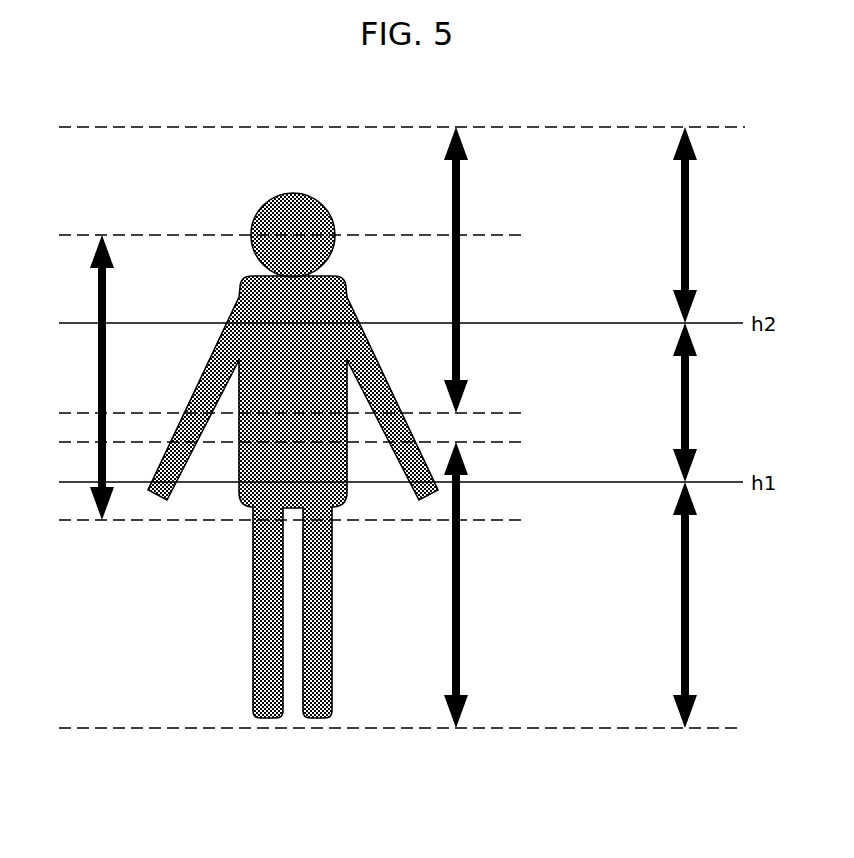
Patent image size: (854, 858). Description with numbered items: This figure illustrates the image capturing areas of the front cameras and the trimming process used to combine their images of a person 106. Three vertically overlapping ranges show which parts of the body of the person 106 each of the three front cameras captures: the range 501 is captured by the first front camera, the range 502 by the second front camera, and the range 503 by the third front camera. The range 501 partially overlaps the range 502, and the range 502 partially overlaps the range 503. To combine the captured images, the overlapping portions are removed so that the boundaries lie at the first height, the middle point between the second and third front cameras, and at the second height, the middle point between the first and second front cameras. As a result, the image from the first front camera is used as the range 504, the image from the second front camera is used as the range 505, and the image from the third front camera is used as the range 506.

The person 106 is at (268, 200).
The range 501 is at (452, 283).
The range 502 is at (98, 372).
The range 503 is at (451, 611).
The range 504 is at (680, 217).
The range 505 is at (680, 392).
The range 506 is at (680, 590).